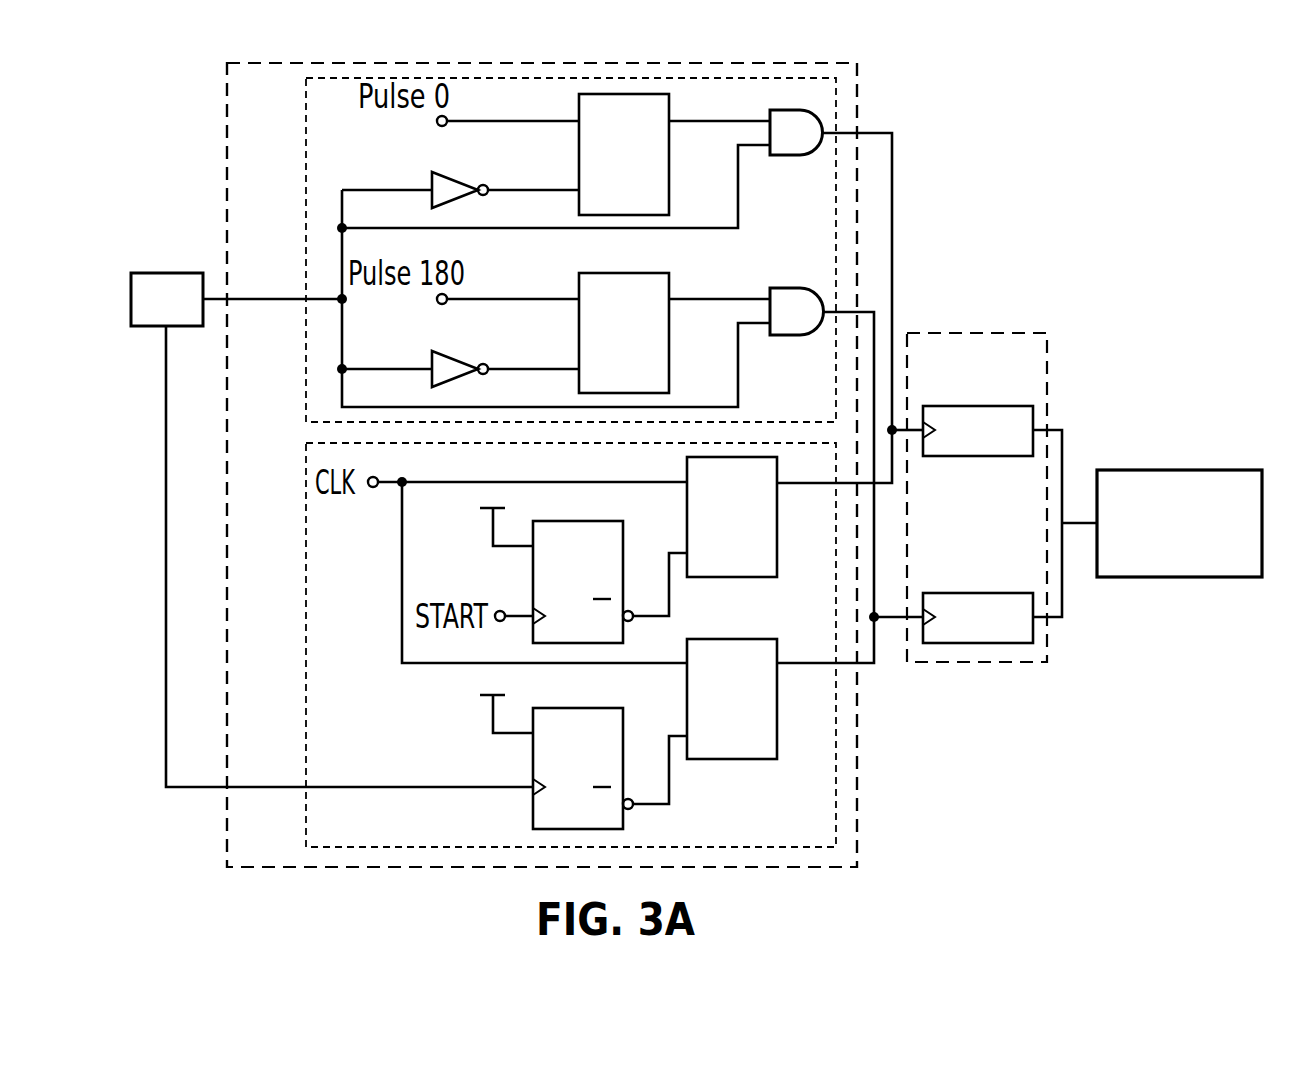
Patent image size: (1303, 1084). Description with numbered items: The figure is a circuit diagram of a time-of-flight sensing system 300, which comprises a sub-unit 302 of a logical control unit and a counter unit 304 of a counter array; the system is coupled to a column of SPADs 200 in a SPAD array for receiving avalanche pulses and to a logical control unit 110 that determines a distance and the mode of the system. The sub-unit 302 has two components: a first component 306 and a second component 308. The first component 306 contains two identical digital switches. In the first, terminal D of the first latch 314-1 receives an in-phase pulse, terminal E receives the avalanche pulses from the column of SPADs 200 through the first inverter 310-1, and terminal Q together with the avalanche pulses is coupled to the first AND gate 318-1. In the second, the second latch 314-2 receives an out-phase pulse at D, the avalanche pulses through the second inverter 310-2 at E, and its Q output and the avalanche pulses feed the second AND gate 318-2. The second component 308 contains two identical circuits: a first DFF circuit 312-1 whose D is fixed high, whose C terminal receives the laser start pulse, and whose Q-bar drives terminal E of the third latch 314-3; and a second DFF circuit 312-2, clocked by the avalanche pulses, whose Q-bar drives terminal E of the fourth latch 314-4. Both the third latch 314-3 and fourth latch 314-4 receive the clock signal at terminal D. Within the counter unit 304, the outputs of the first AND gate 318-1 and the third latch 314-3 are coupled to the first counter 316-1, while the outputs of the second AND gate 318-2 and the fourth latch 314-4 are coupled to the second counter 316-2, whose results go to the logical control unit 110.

The time-of-flight (TOF) sensing system 300 is at (1064, 116).
The sub-unit 302 is at (226, 826).
The counter unit 304 is at (1000, 332).
The first component 306 is at (305, 255).
The second component 308 is at (305, 560).
The column of SPADs 200 is at (332, 530).
The logical control unit 110 is at (1210, 469).
The first inverter 310-1 is at (460, 175).
The second inverter 310-2 is at (460, 357).
The first DFF circuit 312-1 is at (552, 521).
The second DFF circuit 312-2 is at (552, 708).
The first latch 314-1 is at (579, 108).
The second latch 314-2 is at (579, 286).
The third latch 314-3 is at (733, 577).
The fourth latch 314-4 is at (733, 759).
The first counter 316-1 is at (985, 405).
The second counter 316-2 is at (985, 592).
The first AND gate 318-1 is at (780, 156).
The second AND gate 318-2 is at (780, 336).